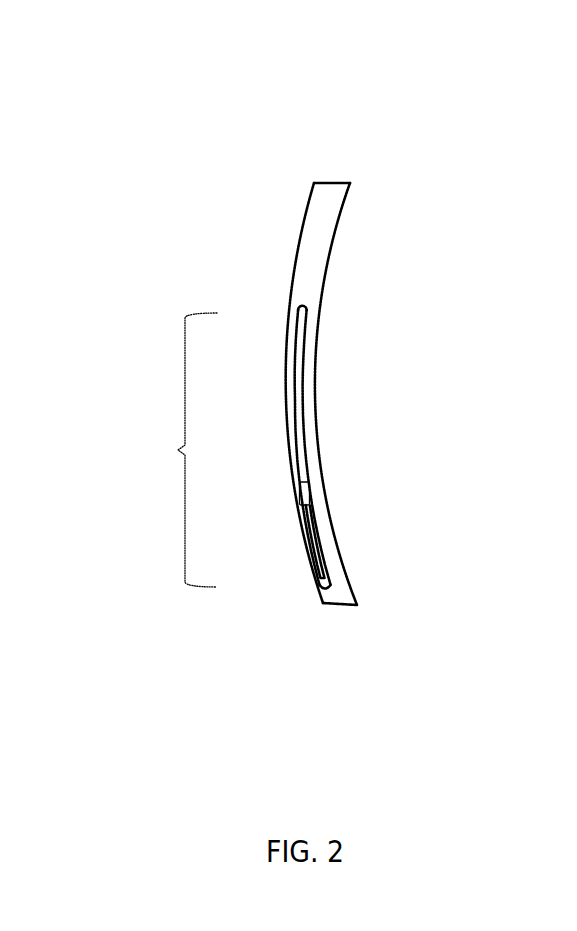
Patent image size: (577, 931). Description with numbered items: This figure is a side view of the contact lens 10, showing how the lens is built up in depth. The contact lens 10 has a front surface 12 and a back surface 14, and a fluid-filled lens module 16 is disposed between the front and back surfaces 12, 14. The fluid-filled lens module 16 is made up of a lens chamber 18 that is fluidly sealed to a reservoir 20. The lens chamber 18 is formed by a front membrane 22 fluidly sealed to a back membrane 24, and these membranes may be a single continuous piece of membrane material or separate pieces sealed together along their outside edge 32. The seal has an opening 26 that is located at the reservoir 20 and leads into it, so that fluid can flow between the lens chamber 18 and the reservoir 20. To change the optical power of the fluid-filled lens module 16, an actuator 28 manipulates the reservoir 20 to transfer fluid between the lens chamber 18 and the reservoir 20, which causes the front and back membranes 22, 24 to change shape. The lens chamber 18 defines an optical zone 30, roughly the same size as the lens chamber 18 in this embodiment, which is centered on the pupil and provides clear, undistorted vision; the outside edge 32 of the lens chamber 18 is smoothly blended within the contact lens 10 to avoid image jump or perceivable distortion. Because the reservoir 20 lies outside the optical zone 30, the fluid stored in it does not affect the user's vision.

The contact lens 10 is at (253, 148).
The front surface 12 is at (293, 273).
The back surface 14 is at (330, 250).
The fluid-filled lens module 16 is at (159, 450).
The lens chamber 18 is at (295, 389).
The reservoir 20 is at (343, 562).
The front membrane 22 is at (289, 434).
The back membrane 24 is at (313, 410).
The opening 26 is at (311, 487).
The actuator 28 is at (314, 503).
The optical zone 30 is at (307, 312).
The outside edge 32 is at (298, 303).